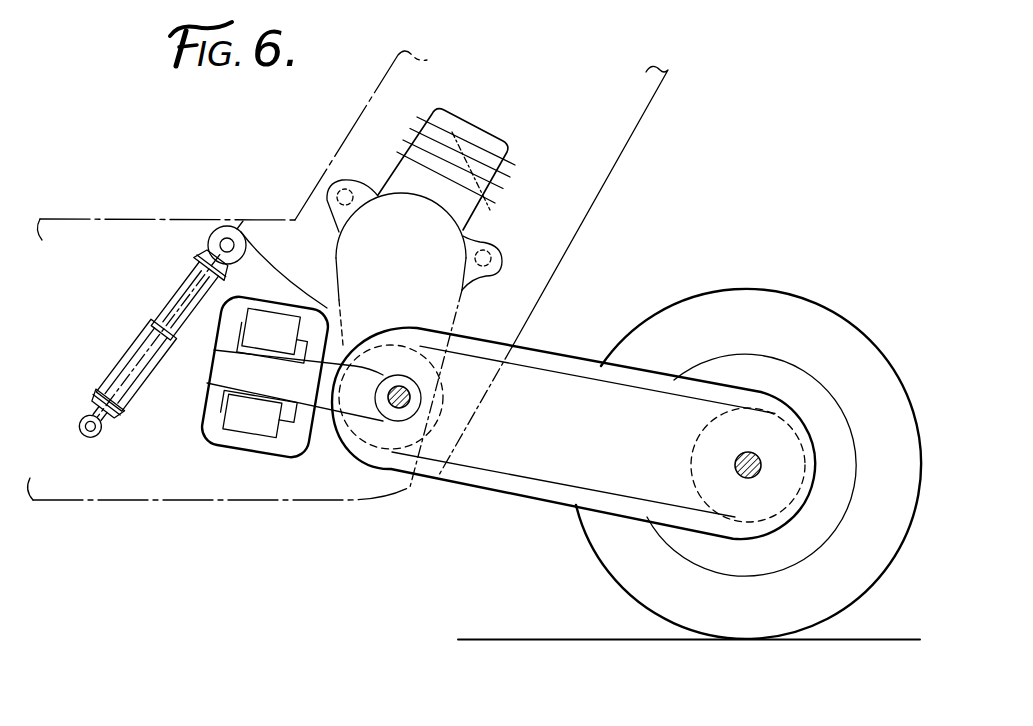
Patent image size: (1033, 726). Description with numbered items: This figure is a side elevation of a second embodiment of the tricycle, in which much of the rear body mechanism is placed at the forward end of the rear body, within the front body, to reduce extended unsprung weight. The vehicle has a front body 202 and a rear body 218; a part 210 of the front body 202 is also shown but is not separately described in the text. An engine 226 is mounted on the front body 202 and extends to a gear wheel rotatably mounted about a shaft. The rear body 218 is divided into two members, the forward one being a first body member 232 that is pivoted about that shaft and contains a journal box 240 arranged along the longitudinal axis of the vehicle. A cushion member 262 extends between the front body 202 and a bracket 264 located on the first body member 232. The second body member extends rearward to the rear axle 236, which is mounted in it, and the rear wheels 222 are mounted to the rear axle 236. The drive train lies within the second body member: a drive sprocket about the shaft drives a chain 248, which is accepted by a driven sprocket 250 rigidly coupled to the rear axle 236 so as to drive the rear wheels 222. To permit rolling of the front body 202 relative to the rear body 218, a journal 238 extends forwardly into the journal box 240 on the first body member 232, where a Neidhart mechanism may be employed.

The front body 202 is at (77, 500).
The upper frame member 210 is at (98, 232).
The rear body 218 is at (540, 345).
The rear wheels 222 is at (765, 290).
The engine 226 is at (498, 140).
The first body member 232 is at (264, 460).
The rear axle 236 is at (736, 464).
The journal 238 is at (226, 367).
The journal box 240 is at (207, 426).
The chain 248 is at (575, 493).
The driven sprocket 250 is at (719, 415).
The cushion member 262 is at (121, 353).
The bracket 264 is at (244, 229).